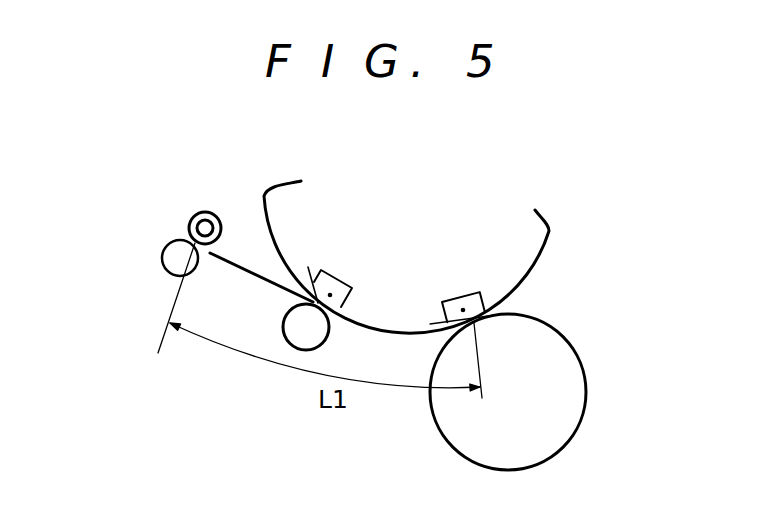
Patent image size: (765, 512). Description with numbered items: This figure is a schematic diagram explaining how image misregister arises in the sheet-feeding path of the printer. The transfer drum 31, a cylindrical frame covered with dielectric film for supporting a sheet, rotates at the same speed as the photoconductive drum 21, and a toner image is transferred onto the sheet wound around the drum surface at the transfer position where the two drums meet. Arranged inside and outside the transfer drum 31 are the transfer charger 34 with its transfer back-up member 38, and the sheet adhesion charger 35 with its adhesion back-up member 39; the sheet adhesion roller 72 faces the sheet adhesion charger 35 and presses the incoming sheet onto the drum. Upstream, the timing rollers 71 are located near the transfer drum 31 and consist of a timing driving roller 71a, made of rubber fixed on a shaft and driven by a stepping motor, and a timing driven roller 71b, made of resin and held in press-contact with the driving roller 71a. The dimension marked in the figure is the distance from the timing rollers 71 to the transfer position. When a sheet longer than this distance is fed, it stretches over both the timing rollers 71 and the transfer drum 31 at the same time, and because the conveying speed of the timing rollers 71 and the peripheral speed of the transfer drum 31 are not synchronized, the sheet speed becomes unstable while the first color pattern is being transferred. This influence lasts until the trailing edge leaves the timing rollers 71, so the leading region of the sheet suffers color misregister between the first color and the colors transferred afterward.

The photoconductive drum 21 is at (572, 347).
The transfer drum 31 is at (539, 261).
The transfer charger 34 is at (470, 294).
The sheet adhesion charger 35 is at (339, 281).
The transfer back-up member 38 is at (434, 322).
The adhesion back-up member 39 is at (308, 267).
The timing rollers 71 is at (195, 240).
The timing driving roller 71a is at (194, 216).
The timing driven roller 71b is at (166, 247).
The sheet adhesion roller 72 is at (284, 318).